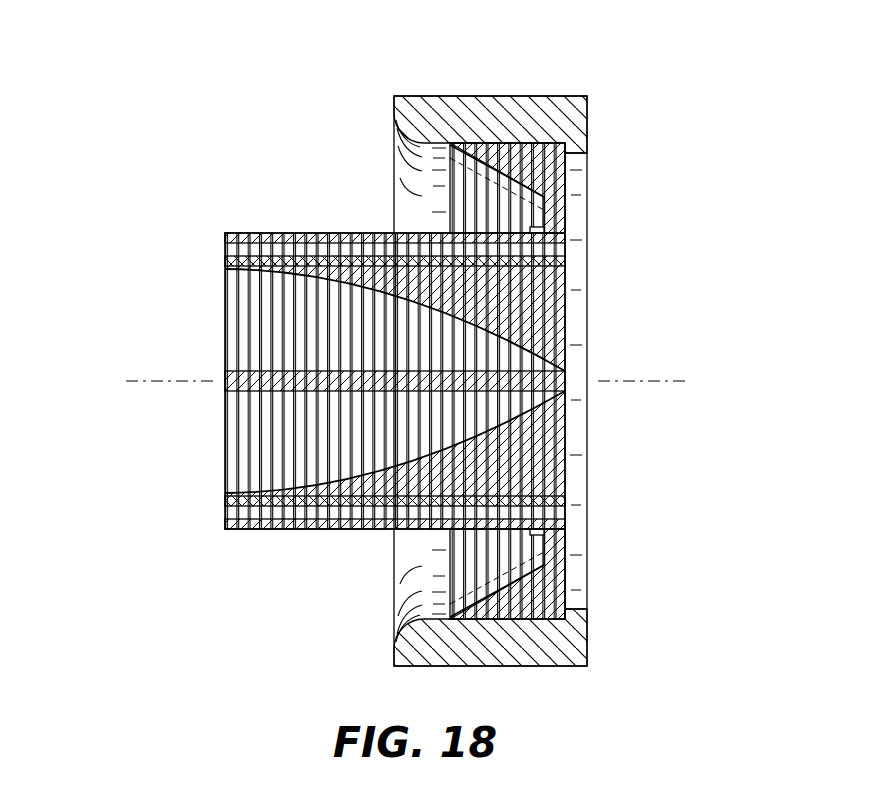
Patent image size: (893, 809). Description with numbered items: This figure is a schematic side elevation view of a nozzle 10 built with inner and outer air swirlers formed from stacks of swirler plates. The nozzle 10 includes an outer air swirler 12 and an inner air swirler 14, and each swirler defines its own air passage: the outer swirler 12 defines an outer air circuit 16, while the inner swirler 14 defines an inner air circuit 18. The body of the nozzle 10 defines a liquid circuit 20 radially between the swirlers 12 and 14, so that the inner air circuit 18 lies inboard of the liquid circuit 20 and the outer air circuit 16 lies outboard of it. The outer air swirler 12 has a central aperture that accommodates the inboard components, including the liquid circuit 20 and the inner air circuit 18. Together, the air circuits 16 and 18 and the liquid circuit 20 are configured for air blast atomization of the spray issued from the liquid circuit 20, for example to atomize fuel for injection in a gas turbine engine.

The nozzle 10 is at (184, 88).
The outer air swirler 12 is at (387, 82).
The inner air swirler 14 is at (370, 353).
The air circuit 16 is at (413, 173).
The air circuit 18 is at (203, 333).
The liquid circuit 20 is at (520, 248).